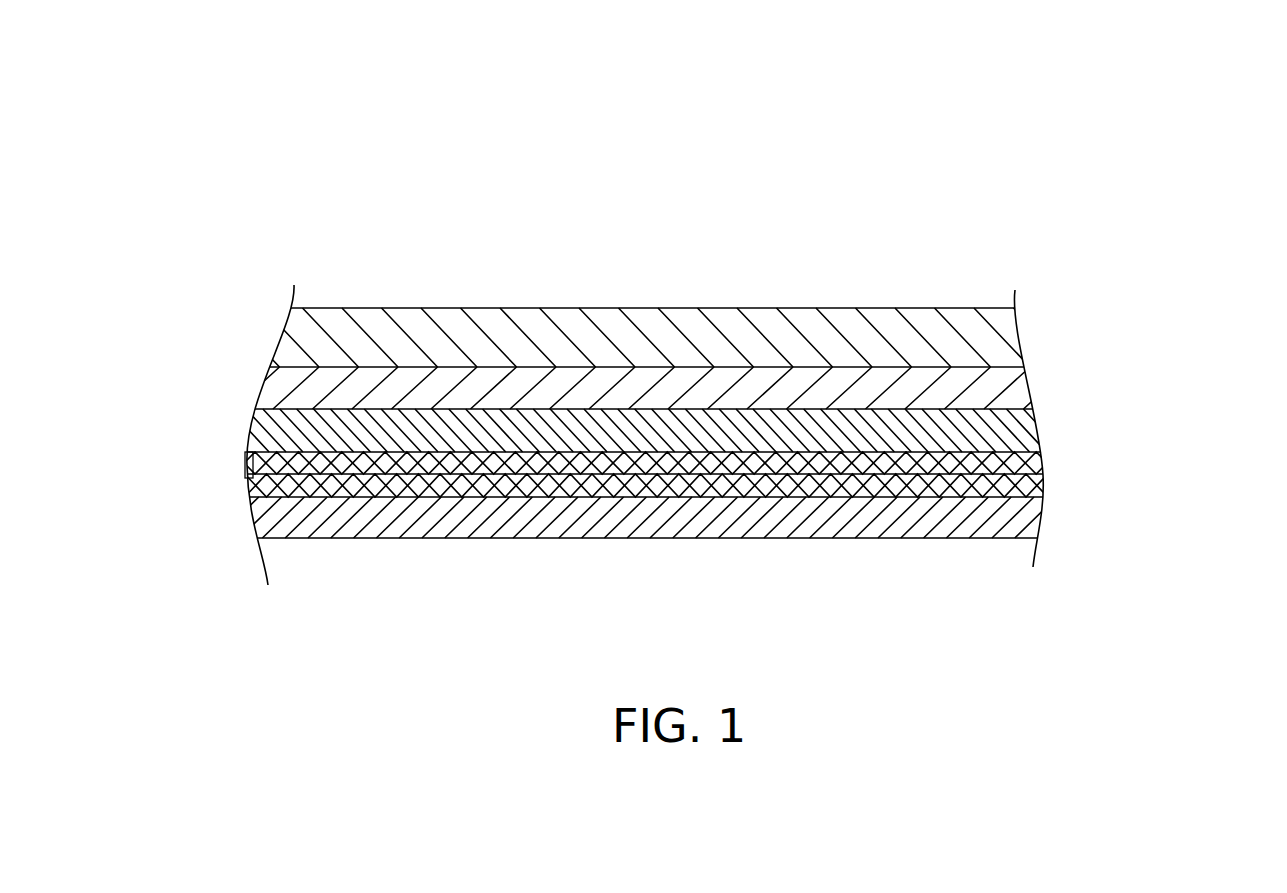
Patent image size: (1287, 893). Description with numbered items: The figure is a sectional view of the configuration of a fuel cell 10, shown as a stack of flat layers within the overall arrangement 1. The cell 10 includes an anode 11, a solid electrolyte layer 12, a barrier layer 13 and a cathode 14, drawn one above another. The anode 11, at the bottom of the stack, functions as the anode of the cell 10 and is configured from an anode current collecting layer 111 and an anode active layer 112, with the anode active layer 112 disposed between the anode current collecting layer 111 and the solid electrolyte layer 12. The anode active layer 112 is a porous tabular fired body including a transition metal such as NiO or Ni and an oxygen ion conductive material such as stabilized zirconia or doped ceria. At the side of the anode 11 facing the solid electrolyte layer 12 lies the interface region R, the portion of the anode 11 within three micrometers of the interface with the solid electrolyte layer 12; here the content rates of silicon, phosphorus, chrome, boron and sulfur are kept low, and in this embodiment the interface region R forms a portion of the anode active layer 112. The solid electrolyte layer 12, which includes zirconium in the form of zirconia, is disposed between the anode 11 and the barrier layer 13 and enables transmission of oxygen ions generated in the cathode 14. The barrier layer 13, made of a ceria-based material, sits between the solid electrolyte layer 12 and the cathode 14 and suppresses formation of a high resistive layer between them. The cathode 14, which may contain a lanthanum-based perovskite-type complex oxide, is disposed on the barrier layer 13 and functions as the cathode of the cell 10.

The laminated structure 1 is at (250, 138).
The fuel cell 10 is at (1180, 302).
The anode 11 is at (1121, 470).
The anode current collecting layer 111 is at (1030, 515).
The anode active layer 112 is at (1028, 481).
The solid electrolyte layer 12 is at (1005, 432).
The barrier layer 13 is at (1003, 366).
The cathode 14 is at (1003, 312).
The interface region R is at (246, 463).